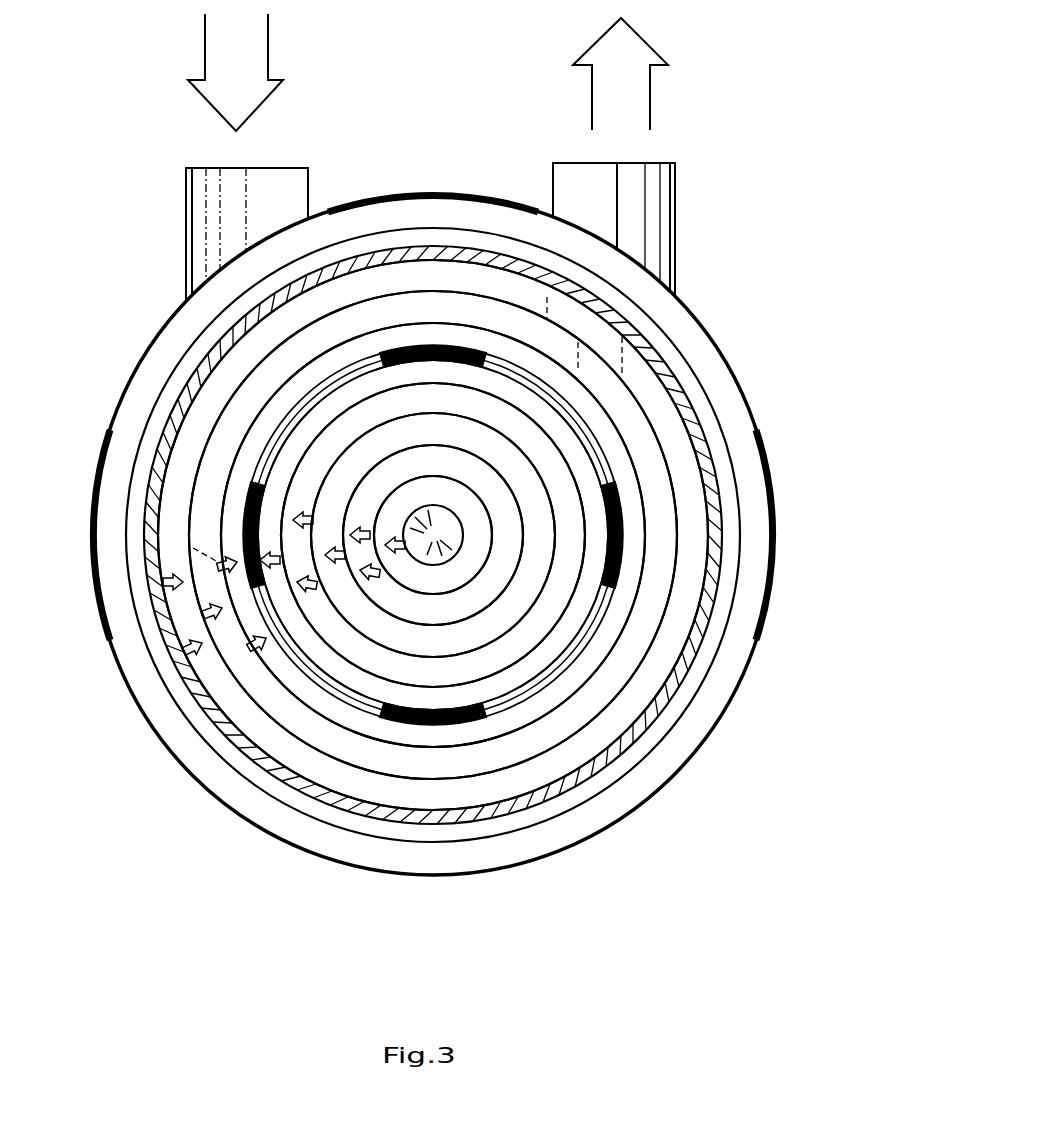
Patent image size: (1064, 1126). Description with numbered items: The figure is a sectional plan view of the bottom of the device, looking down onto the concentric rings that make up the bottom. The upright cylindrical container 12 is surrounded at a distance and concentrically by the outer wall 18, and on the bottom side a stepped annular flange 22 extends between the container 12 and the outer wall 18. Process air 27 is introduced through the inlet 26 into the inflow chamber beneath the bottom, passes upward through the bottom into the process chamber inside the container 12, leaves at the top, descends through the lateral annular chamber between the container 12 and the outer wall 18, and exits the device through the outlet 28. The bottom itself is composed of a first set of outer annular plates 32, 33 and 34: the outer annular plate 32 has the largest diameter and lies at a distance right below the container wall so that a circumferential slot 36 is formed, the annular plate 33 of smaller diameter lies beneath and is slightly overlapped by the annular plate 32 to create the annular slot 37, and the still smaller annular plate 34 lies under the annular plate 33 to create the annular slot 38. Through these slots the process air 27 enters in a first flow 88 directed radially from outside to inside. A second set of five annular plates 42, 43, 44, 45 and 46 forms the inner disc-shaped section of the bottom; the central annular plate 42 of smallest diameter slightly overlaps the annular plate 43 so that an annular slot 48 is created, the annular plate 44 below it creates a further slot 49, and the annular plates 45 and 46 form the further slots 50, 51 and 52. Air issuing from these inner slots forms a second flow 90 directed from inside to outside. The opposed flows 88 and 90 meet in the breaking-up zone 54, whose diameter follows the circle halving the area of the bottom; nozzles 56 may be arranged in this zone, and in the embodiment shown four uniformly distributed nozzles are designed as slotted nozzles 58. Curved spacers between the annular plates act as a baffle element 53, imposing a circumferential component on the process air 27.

The container 12 is at (245, 748).
The outer wall 18 is at (160, 735).
The stepped annular flange 22 is at (140, 665).
The inlet 26 is at (207, 233).
The process air 27 is at (228, 58).
The outlet 28 is at (665, 187).
The outer annular plate 32 is at (303, 760).
The annular plate 33 is at (355, 748).
The annular plate 34 is at (400, 735).
The circumferential slot 36 is at (403, 795).
The annular slot 37 is at (450, 769).
The annular slot 38 is at (500, 737).
The central annular plate 42 is at (463, 580).
The annular plate 43 is at (475, 608).
The annular plate 44 is at (480, 638).
The annular plate 45 is at (483, 668).
The annular plate 46 is at (490, 693).
The annular slot 48 is at (465, 533).
The slot 49 is at (493, 513).
The slot 50 is at (518, 490).
The slot 51 is at (537, 463).
The slot 52 is at (553, 436).
The baffle element 53 is at (547, 297).
The breaking-up zone 54 is at (260, 462).
The nozzles 56 is at (262, 513).
The slotted nozzles 58 is at (623, 522).
The first flow 88 is at (163, 573).
The second flow 90 is at (363, 527).